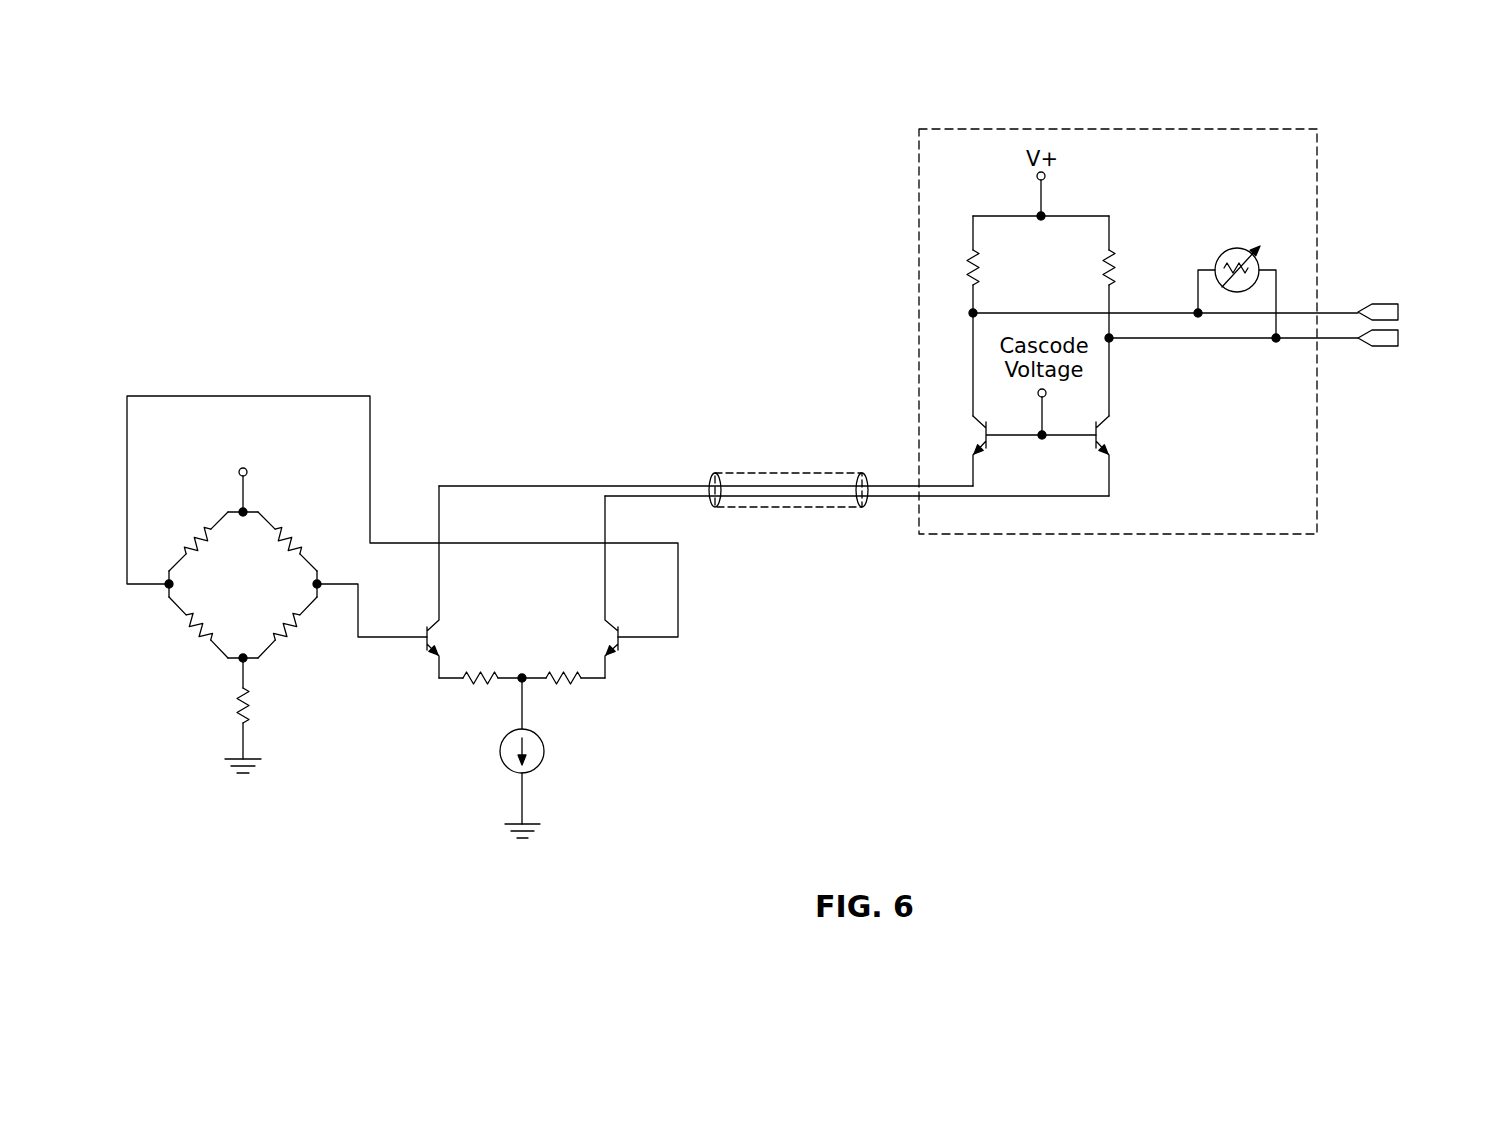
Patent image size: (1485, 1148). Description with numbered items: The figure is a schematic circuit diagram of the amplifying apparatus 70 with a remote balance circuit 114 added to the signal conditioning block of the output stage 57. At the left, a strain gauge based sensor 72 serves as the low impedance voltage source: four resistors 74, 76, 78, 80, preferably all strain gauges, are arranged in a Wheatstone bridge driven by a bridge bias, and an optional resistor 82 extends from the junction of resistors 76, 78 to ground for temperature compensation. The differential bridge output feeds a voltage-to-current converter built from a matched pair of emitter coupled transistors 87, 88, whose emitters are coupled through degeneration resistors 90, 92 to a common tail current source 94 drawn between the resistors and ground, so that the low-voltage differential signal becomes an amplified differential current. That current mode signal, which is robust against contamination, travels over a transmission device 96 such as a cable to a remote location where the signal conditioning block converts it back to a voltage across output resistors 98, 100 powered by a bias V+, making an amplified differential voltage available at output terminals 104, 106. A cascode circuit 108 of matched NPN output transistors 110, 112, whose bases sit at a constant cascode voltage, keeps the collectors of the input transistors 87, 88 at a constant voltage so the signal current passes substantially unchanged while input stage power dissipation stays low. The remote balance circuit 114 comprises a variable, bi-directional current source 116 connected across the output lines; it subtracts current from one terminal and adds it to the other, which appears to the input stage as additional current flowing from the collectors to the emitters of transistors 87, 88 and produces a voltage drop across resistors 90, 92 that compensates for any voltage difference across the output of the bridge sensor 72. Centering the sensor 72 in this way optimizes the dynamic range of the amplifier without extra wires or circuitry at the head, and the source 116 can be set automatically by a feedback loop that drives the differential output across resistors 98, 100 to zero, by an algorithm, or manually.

The output stage 57 is at (1252, 562).
The amplifying apparatus 70 is at (738, 385).
The strain gauge based sensor 72 is at (201, 678).
The resistor 74 is at (290, 532).
The resistor 76 is at (285, 640).
The resistor 78 is at (200, 638).
The resistor 80 is at (205, 532).
The resistor 82 is at (248, 724).
The emitter coupled transistor 87 is at (447, 622).
The emitter coupled transistor 88 is at (596, 622).
The degeneration resistor 90 is at (468, 685).
The degeneration resistor 92 is at (578, 685).
The current source 94 is at (545, 752).
The transmission device 96 is at (824, 472).
The output resistor 98 is at (973, 272).
The output resistor 100 is at (1109, 272).
The output terminal 104 is at (1385, 303).
The output terminal 106 is at (1385, 347).
The cascode circuit 108 is at (1112, 500).
The output transistor 110 is at (958, 415).
The output transistor 112 is at (1125, 410).
The remote balance circuit 114 is at (1275, 255).
The current source 116 is at (1237, 248).